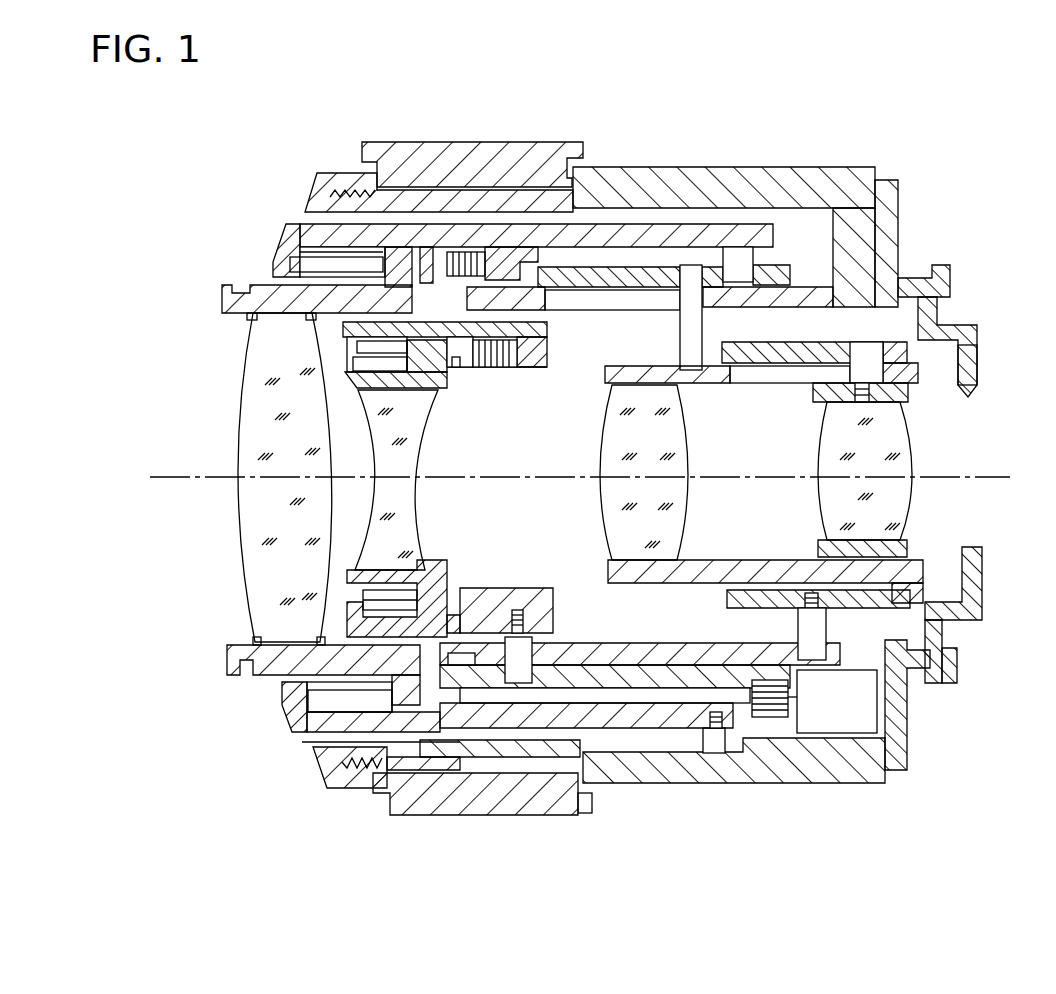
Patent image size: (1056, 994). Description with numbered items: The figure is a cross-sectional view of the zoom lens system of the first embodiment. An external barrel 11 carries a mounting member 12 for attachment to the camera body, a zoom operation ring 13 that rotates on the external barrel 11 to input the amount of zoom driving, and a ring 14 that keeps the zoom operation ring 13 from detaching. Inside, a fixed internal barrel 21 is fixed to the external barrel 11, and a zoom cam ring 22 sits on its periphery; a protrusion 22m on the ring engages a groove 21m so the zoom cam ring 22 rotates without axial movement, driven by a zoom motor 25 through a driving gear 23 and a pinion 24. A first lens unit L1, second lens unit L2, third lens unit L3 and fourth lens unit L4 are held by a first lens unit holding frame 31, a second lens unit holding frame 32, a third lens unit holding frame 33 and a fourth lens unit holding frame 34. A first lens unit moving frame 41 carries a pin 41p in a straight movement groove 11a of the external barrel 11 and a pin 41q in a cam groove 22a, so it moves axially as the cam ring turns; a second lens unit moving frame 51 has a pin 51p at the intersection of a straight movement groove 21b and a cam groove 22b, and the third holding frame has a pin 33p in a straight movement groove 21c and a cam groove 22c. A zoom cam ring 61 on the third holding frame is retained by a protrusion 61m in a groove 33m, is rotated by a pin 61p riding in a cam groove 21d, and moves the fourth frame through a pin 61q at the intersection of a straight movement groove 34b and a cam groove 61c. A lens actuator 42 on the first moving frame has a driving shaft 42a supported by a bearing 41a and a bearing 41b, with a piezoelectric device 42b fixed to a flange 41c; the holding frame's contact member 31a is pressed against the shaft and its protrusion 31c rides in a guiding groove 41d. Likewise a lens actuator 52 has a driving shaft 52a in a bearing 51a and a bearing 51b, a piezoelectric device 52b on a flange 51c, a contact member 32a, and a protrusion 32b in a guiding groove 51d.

The external barrel 11 is at (877, 168).
The straight movement groove 11a is at (622, 752).
The mounting member 12 is at (888, 237).
The zoom operation ring 13 is at (532, 150).
The ring 14 is at (321, 173).
The fixed internal barrel 21 is at (905, 270).
The straight movement groove 21b is at (537, 650).
The straight movement groove 21c is at (668, 290).
The cam groove 21d is at (907, 673).
The groove 21m is at (440, 660).
The zoom cam ring 22 is at (857, 190).
The cam groove 22a is at (782, 280).
The cam groove 22b is at (578, 742).
The cam groove 22c is at (706, 170).
The protrusion 22m is at (470, 670).
The driving gear 23 is at (780, 715).
The pinion 24 is at (765, 715).
The zoom motor 25 is at (837, 722).
The first lens unit holding frame 31 is at (225, 308).
The contact member 31a is at (363, 185).
The protrusion 31c is at (347, 750).
The second lens unit holding frame 32 is at (445, 590).
The contact member 32a is at (438, 362).
The protrusion 32b is at (448, 583).
The third lens unit holding frame 33 is at (622, 370).
The groove 33m is at (913, 548).
The pin 33p is at (702, 325).
The fourth lens unit holding frame 34 is at (900, 403).
The straight movement groove 34b is at (770, 377).
The first lens unit moving frame 41 is at (287, 227).
The bearing 41a is at (278, 262).
The bearing 41b is at (388, 258).
The flange 41c is at (623, 297).
The guiding groove 41d is at (307, 732).
The pin 41p is at (715, 745).
The pin 41q is at (734, 262).
The lens actuator 42 is at (240, 265).
The driving shaft 42a is at (296, 243).
The piezoelectric device 42b is at (470, 250).
The second lens unit moving frame 51 is at (547, 590).
The bearing 51a is at (347, 353).
The bearing 51b is at (455, 368).
The flange 51c is at (553, 340).
The guiding groove 51d is at (383, 607).
The pin 51p is at (520, 690).
The lens actuator 52 is at (488, 377).
The driving shaft 52a is at (347, 377).
The piezoelectric device 52b is at (505, 368).
The zoom cam ring 61 is at (805, 343).
The cam groove 61c is at (885, 357).
The protrusion 61m is at (945, 623).
The pin 61p is at (830, 655).
The pin 61q is at (848, 410).
The first lens unit L1 is at (237, 513).
The second lens unit L2 is at (412, 535).
The third lens unit L3 is at (686, 520).
The fourth lens unit L4 is at (890, 506).